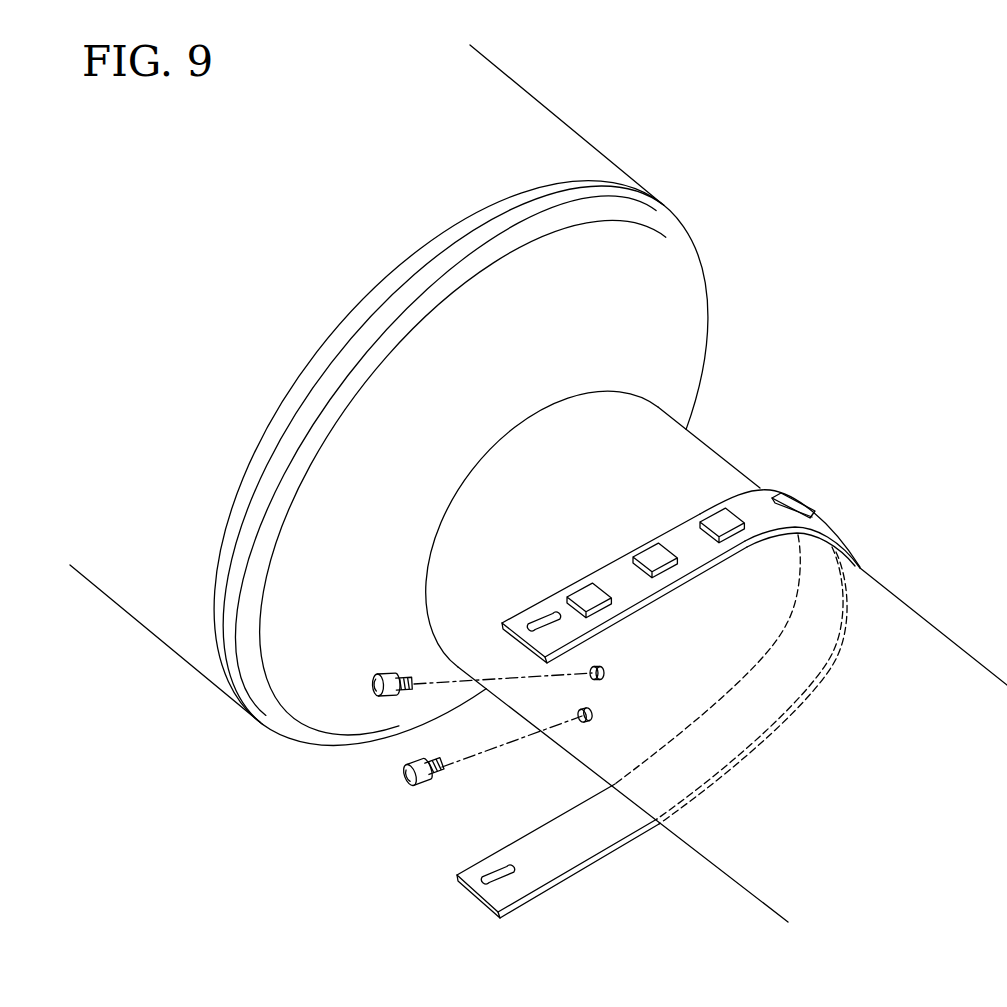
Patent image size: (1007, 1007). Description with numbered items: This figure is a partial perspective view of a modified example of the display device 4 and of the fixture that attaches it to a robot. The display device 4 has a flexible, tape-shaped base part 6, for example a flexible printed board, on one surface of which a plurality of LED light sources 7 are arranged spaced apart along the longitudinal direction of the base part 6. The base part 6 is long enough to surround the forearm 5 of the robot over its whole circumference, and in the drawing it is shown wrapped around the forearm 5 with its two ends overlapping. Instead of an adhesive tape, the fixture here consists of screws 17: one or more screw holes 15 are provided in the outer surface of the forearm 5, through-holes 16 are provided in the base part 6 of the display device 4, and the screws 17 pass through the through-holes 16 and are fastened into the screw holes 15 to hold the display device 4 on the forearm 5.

The display device 4 is at (814, 503).
The forearm 5 is at (940, 658).
The base part 6 is at (615, 572).
The LED light sources 7 is at (652, 552).
The screw holes 15 is at (601, 681).
The through-holes 16 is at (545, 619).
The screws 17 is at (378, 680).